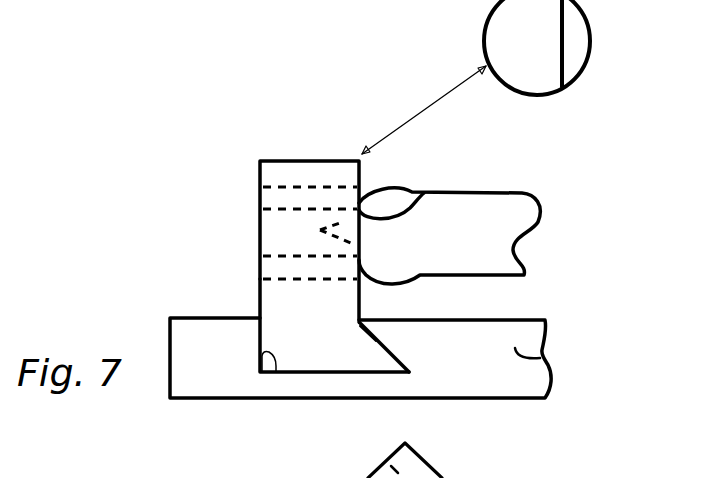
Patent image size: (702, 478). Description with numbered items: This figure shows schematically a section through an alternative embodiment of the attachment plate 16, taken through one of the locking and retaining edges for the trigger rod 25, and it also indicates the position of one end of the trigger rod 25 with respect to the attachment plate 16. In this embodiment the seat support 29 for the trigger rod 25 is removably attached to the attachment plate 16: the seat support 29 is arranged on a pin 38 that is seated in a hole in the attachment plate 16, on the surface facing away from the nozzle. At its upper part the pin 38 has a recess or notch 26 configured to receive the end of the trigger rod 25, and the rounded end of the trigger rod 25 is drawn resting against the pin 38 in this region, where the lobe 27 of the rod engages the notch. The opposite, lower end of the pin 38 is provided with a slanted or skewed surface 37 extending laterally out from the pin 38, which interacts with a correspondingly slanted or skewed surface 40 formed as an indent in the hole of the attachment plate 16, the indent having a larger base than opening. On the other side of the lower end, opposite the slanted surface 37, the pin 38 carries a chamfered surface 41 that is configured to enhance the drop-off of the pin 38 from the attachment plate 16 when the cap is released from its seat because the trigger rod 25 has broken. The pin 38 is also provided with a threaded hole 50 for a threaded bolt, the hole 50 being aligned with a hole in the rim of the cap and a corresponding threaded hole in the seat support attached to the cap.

The attachment plate 16 is at (540, 356).
The trigger rod 25 is at (490, 220).
The recess or notch 26 is at (341, 237).
The lobe 27 is at (421, 206).
The seat support 29 is at (277, 172).
The slanted or skewed surface 37 is at (380, 325).
The pin 38 is at (270, 302).
The slanted or skewed surface 40 is at (391, 320).
The chamfered surface 41 is at (276, 372).
The threaded hole 50 is at (270, 238).